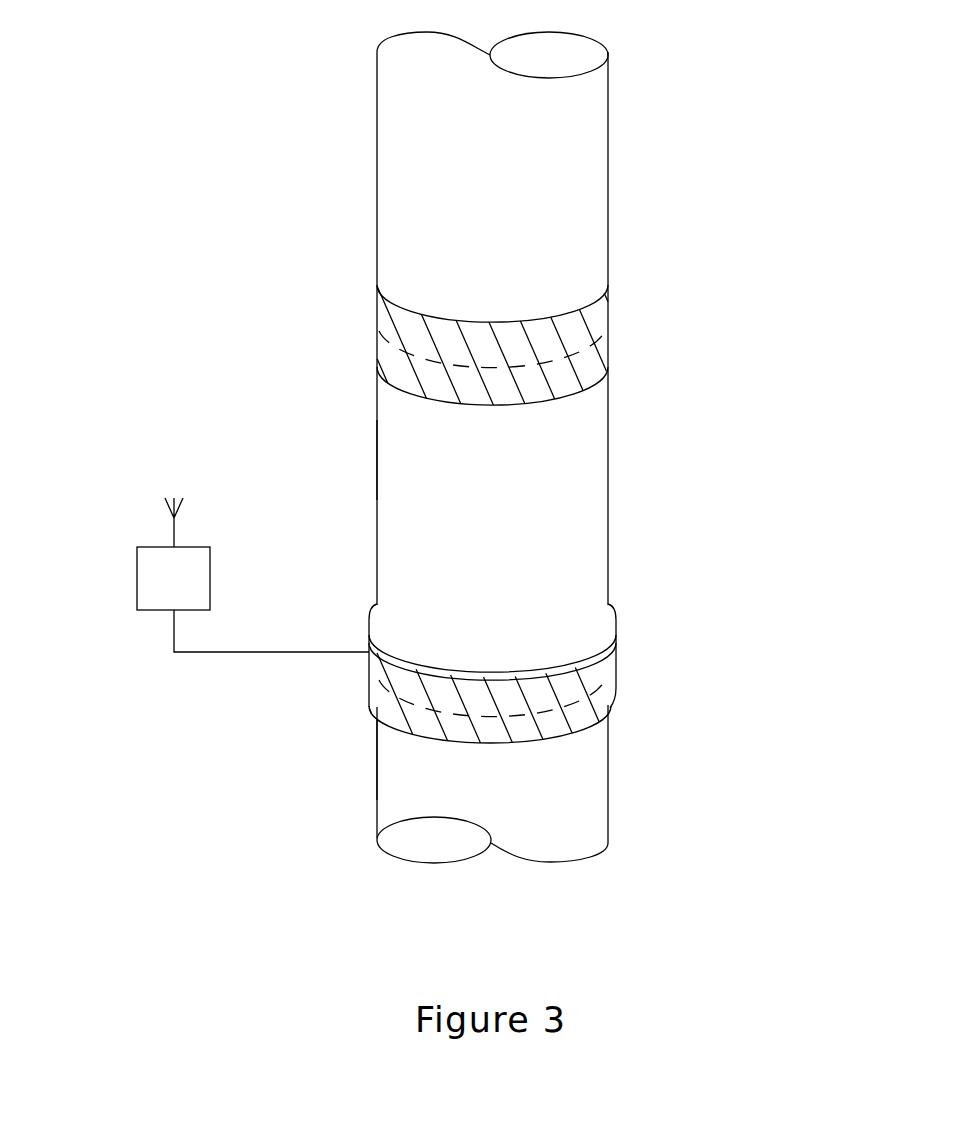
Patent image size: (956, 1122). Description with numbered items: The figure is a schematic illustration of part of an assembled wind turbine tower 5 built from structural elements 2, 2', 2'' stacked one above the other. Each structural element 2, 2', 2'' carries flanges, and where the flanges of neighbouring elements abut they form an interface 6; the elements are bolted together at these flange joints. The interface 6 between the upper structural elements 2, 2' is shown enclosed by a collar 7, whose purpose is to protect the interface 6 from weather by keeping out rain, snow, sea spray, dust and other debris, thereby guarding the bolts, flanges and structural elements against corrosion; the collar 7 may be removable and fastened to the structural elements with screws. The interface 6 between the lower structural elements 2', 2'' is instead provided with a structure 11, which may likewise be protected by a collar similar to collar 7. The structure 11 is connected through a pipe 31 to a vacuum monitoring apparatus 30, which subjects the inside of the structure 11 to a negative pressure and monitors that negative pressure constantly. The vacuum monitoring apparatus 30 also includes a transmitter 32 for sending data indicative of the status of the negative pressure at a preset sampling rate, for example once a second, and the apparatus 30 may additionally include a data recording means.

The structural element 2 is at (449, 447).
The structural element 2' is at (324, 460).
The structural element 2'' is at (329, 760).
The assembled tower 5 is at (262, 323).
The interface 6 is at (560, 357).
The collar 7 is at (597, 307).
The structure 11 is at (603, 658).
The vacuum monitoring apparatus 30 is at (168, 583).
The pipe 31 is at (174, 627).
The transmitter 32 is at (167, 503).